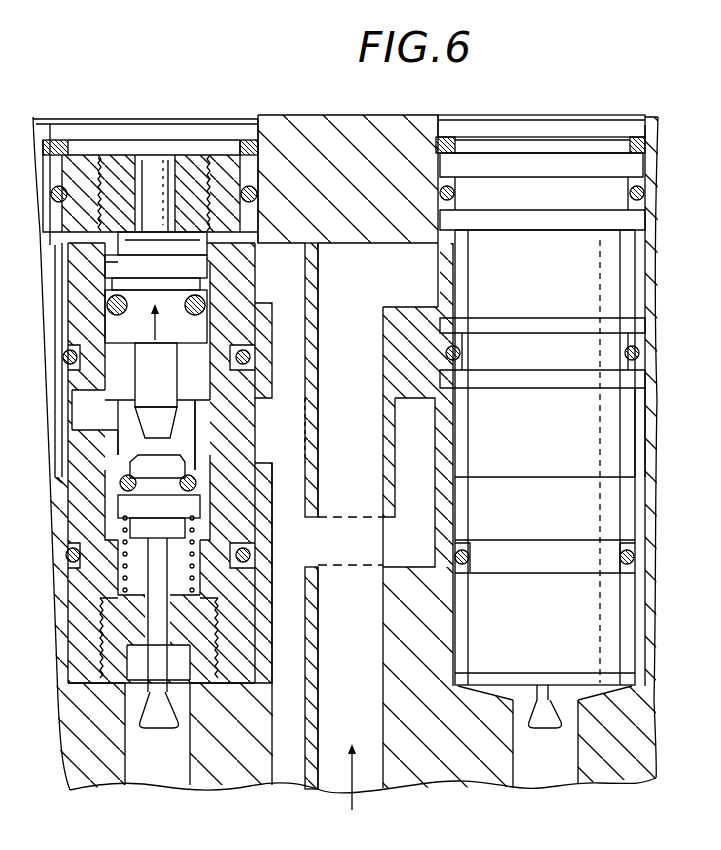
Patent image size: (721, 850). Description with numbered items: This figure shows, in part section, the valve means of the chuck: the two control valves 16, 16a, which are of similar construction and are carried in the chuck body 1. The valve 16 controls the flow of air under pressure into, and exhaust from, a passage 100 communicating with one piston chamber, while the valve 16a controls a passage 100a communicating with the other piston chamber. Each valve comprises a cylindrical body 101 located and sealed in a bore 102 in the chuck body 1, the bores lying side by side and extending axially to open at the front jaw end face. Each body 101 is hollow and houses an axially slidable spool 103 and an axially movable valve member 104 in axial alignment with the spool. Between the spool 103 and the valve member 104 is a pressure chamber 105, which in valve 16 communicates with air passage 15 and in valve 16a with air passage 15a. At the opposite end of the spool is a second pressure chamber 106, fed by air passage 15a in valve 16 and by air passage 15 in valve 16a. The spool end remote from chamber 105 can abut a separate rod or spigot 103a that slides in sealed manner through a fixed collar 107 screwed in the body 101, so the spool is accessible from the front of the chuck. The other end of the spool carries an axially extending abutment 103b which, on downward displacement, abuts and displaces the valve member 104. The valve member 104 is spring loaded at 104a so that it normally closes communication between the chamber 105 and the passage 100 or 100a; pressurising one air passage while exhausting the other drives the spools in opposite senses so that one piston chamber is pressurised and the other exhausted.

The chuck body 1 is at (322, 131).
The air passage 15 is at (288, 772).
The air passage 15a is at (375, 778).
The control valve 16 is at (565, 108).
The control valve 16a is at (103, 110).
The passage 100 is at (545, 777).
The passage 100a is at (187, 824).
The cylindrical body 101 is at (77, 507).
The bore 102 is at (63, 421).
The spool 103 is at (167, 294).
The rod or spigot 103a is at (148, 167).
The axially extending abutment 103b is at (187, 440).
The valve member 104 is at (152, 553).
The spring loading 104a is at (200, 576).
The pressure chamber 105 is at (185, 428).
The second pressure chamber 106 is at (202, 238).
The fixed collar 107 is at (115, 163).